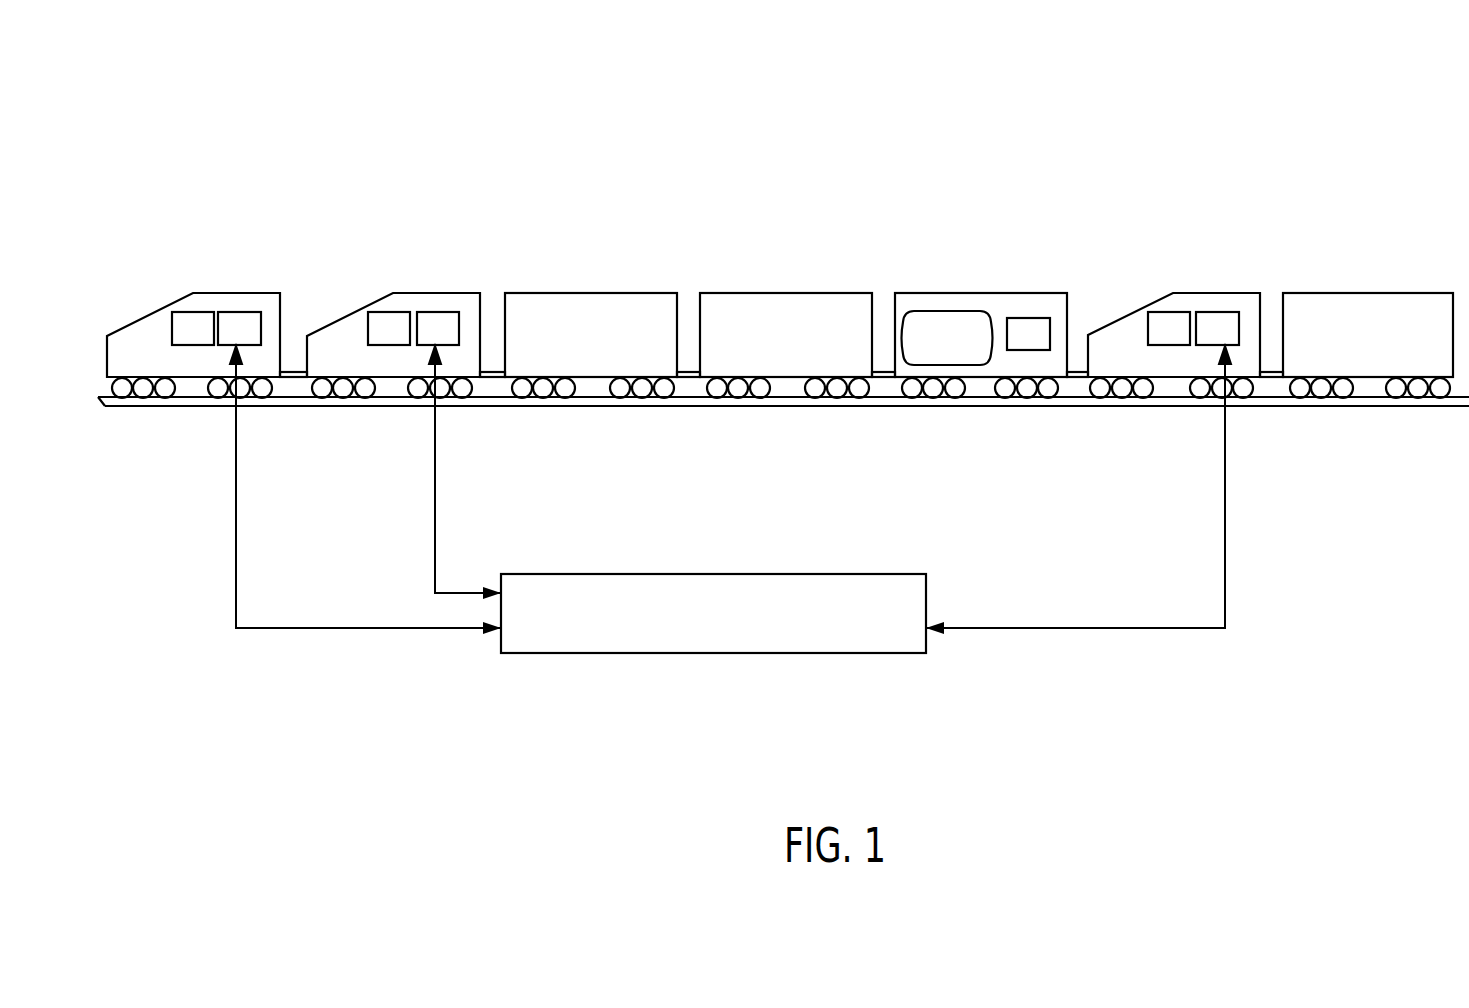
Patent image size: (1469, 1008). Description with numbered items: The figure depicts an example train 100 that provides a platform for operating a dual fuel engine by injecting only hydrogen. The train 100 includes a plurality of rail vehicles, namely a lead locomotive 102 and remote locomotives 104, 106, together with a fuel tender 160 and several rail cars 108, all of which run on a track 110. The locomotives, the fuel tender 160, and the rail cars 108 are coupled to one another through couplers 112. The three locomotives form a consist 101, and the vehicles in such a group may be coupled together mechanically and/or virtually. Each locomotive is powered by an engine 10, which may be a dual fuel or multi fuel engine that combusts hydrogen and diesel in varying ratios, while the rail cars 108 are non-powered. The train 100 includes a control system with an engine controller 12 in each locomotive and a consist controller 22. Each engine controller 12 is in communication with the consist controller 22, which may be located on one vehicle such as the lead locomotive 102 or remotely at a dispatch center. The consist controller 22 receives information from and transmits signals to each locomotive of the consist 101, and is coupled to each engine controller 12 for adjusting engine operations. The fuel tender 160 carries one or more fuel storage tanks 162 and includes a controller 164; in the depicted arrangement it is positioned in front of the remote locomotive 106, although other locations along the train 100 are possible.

The train 100 is at (1228, 88).
The consist 101 is at (296, 236).
The lead locomotive 102 is at (215, 293).
The remote locomotive 104 is at (428, 293).
The remote locomotive 106 is at (1187, 293).
The rail car 108 is at (588, 293).
The track 110 is at (1397, 408).
The coupler 112 is at (290, 373).
The engine 10 is at (181, 343).
The engine controller 12 is at (227, 343).
The fuel tender 160 is at (960, 293).
The fuel storage tank 162 is at (932, 349).
The controller 164 is at (1013, 349).
The consist controller 22 is at (838, 626).